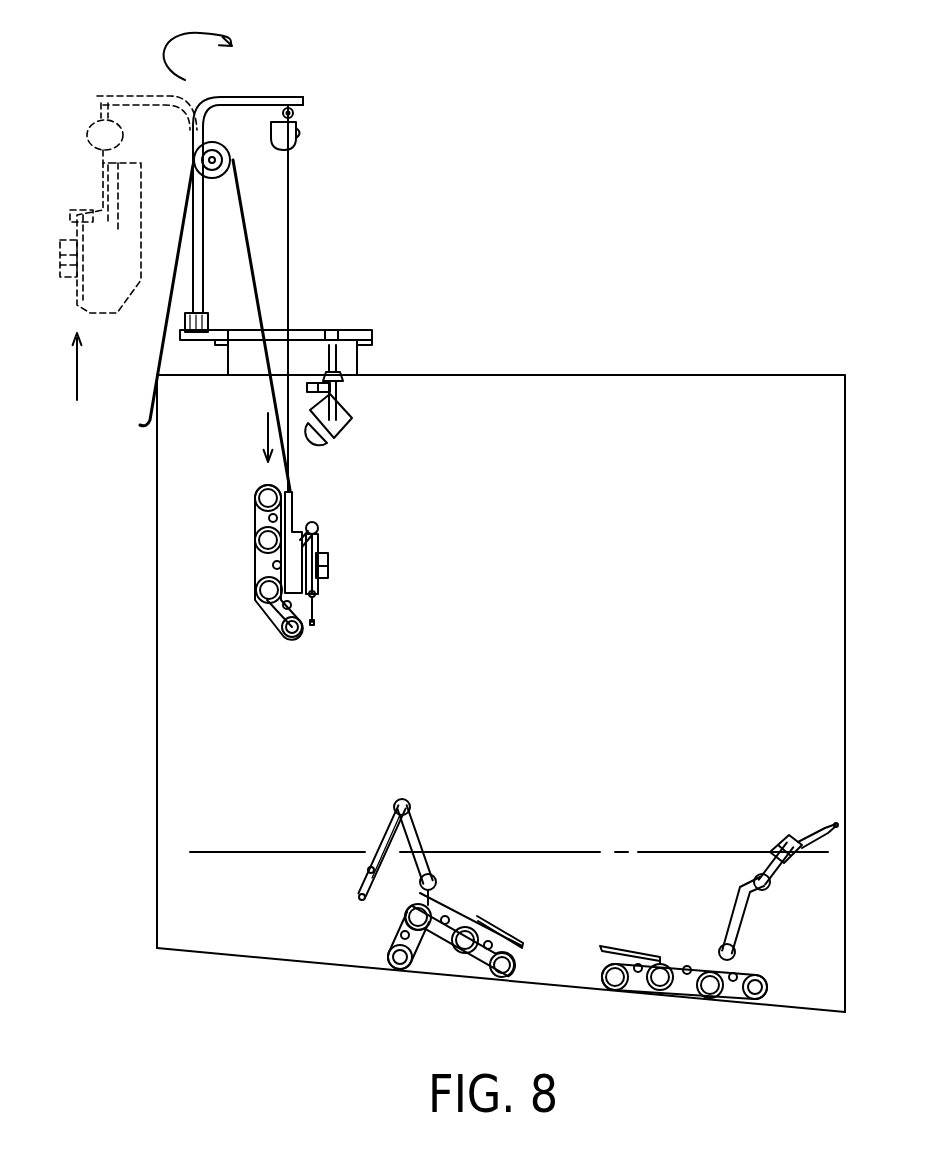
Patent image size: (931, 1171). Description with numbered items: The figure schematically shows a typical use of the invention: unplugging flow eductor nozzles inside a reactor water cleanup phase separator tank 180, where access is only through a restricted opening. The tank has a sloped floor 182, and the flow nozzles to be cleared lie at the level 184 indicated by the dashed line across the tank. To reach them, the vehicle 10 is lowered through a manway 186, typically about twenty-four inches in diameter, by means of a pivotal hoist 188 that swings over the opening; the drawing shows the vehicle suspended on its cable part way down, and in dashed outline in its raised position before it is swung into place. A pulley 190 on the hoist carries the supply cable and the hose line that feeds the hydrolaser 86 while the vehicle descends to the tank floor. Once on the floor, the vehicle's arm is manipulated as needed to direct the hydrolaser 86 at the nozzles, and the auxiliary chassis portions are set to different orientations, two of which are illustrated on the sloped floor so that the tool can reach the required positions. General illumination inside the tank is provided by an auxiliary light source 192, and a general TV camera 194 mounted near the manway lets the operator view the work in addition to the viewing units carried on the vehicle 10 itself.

The vehicle 10 is at (342, 616).
The hydrolaser 86 is at (837, 825).
The reactor water cleanup phase separator tank 180 is at (615, 377).
The floor 182 is at (295, 963).
The level 184 is at (492, 839).
The manway 186 is at (300, 328).
The pivotal hoist 188 is at (303, 101).
The pulley 190 is at (233, 163).
The auxiliary light source 192 is at (320, 443).
The general TV camera 194 is at (351, 400).